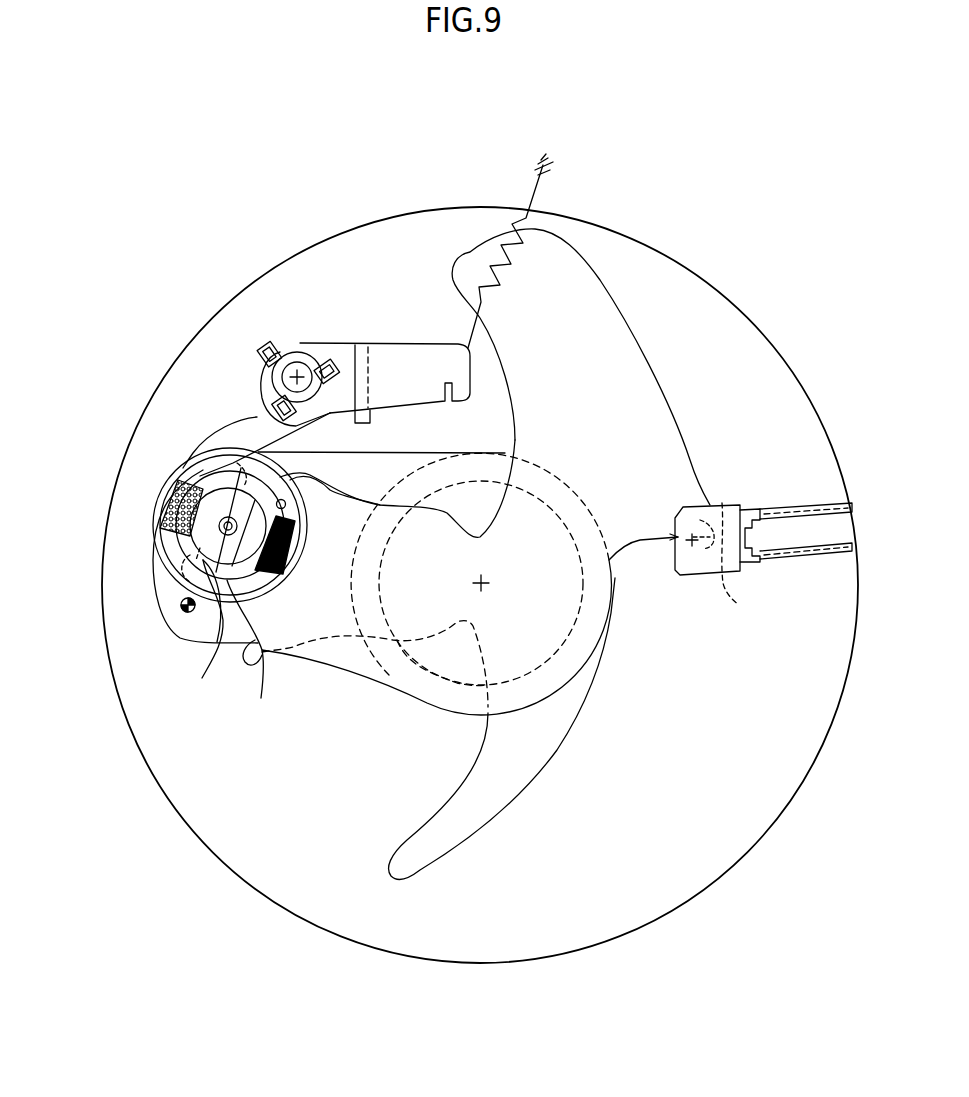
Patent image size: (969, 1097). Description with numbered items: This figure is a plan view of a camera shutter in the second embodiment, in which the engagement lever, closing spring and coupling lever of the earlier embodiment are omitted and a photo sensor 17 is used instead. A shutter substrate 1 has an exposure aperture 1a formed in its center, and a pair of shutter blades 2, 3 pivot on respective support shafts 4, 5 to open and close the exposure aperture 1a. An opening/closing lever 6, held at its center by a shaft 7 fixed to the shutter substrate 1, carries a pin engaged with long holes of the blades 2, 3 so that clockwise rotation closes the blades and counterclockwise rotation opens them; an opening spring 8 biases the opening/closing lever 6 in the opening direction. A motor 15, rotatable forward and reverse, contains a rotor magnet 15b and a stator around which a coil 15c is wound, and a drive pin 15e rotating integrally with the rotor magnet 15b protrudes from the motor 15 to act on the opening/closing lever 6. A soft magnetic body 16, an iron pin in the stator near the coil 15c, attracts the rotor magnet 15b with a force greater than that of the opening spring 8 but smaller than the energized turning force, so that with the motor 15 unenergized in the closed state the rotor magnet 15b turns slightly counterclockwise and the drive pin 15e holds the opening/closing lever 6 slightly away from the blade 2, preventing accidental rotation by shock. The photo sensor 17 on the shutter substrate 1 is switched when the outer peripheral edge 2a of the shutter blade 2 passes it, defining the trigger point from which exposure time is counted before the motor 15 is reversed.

The shutter substrate 1 is at (782, 814).
The exposure aperture 1a is at (437, 673).
The shutter blade 2 is at (666, 402).
The outer peripheral edge 2a is at (727, 560).
The shutter blade 3 is at (530, 768).
The support shaft 4 is at (183, 607).
The support shaft 5 is at (206, 634).
The opening/closing lever 6 is at (248, 423).
The shaft 7 is at (293, 352).
The opening spring 8 is at (533, 187).
The motor 15 is at (158, 480).
The rotor magnet 15b is at (240, 643).
The coil 15c is at (167, 506).
The drive pin 15e is at (228, 447).
The soft magnetic body 16 is at (288, 474).
The photo sensor 17 is at (723, 511).